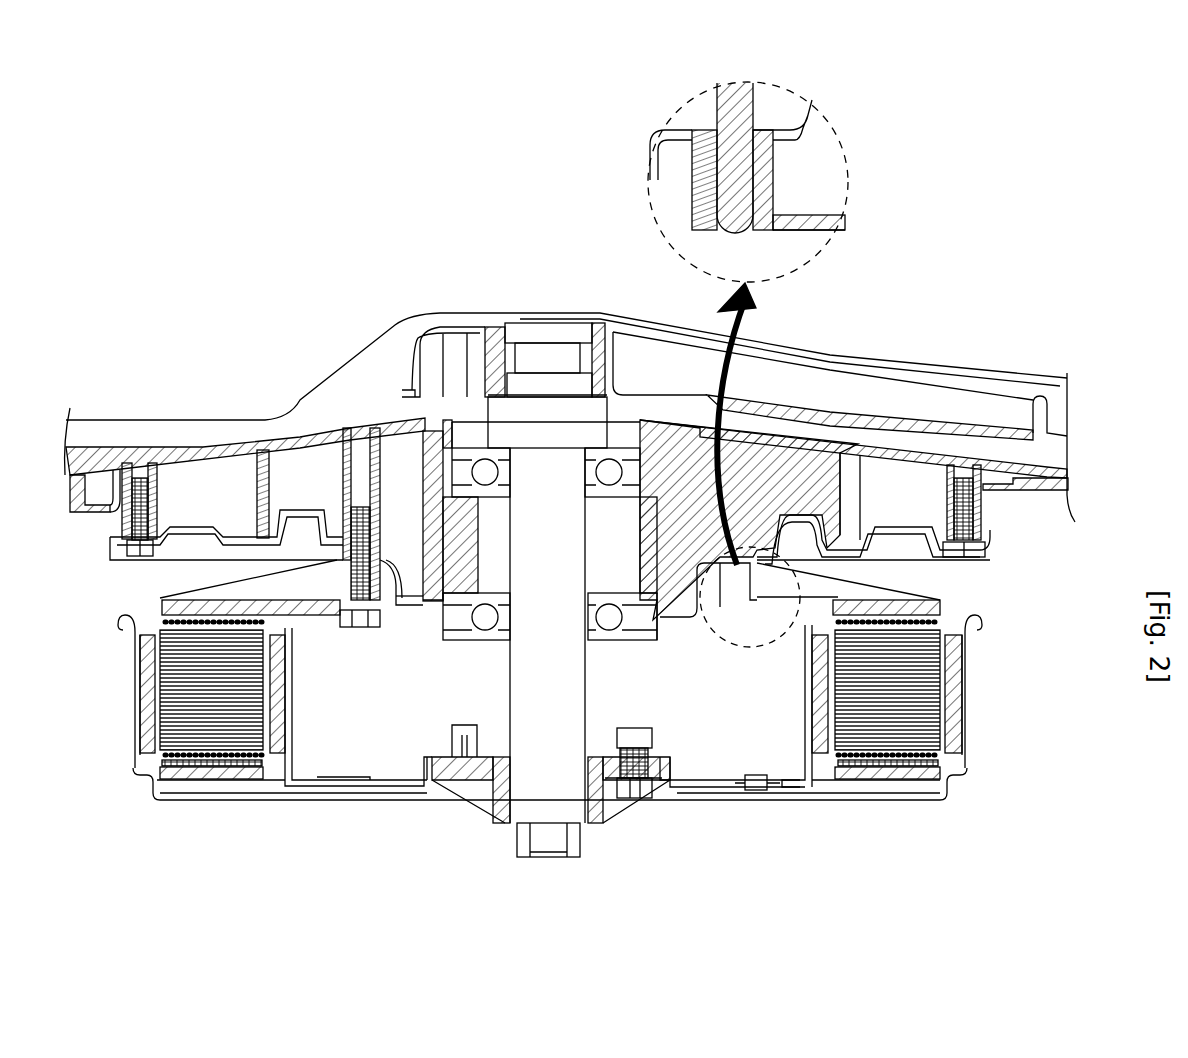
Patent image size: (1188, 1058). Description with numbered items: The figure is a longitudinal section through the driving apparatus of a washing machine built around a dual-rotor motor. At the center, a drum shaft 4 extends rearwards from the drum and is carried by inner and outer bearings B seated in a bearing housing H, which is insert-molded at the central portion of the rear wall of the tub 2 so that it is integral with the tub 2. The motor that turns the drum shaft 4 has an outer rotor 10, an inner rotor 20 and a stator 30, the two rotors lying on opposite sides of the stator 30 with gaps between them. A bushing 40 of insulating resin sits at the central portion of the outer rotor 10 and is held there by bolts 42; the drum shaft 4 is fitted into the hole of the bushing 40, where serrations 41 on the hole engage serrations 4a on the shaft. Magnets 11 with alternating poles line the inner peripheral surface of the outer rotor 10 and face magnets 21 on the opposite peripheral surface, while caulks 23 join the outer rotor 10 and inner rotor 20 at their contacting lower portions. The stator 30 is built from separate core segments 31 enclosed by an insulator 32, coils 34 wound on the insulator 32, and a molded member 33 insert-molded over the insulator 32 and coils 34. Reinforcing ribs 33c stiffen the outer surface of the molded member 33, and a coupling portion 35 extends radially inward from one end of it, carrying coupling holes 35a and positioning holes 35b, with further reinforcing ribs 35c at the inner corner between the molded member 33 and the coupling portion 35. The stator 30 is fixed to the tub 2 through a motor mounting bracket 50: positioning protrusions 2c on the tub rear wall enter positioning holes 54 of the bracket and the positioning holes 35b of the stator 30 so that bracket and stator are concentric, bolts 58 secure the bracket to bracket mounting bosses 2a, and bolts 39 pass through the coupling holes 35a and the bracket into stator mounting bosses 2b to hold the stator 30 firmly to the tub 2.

The tub 2 is at (362, 440).
The bracket mounting bosses 2a is at (980, 498).
The stator mounting bosses 2b is at (335, 470).
The positioning protrusions 2c is at (705, 188).
The drum shaft 4 is at (546, 480).
The serrations 4a is at (596, 818).
The outer rotor 10 is at (877, 803).
The magnets 11 is at (146, 690).
The inner rotor 20 is at (800, 737).
The magnets 21 is at (282, 720).
The caulks 23 is at (745, 782).
The stator 30 is at (945, 608).
The core segments 31 is at (172, 728).
The insulator 32 is at (172, 765).
The molded member 33 is at (215, 768).
The reinforcing ribs 33c is at (272, 580).
The coils 34 is at (258, 768).
The coupling portion 35 is at (401, 600).
The coupling holes 35a is at (398, 600).
The positioning holes 35b is at (778, 213).
The reinforcing ribs 35c is at (793, 612).
The bolts 39 is at (358, 618).
The bushing 40 is at (497, 825).
The serrations 41 is at (500, 790).
The bolts 42 is at (628, 775).
The motor mounting bracket 50 is at (244, 532).
The positioning holes 54 is at (730, 185).
The bolts 58 is at (980, 522).
The bearings B is at (500, 487).
The bearing housing H is at (646, 640).